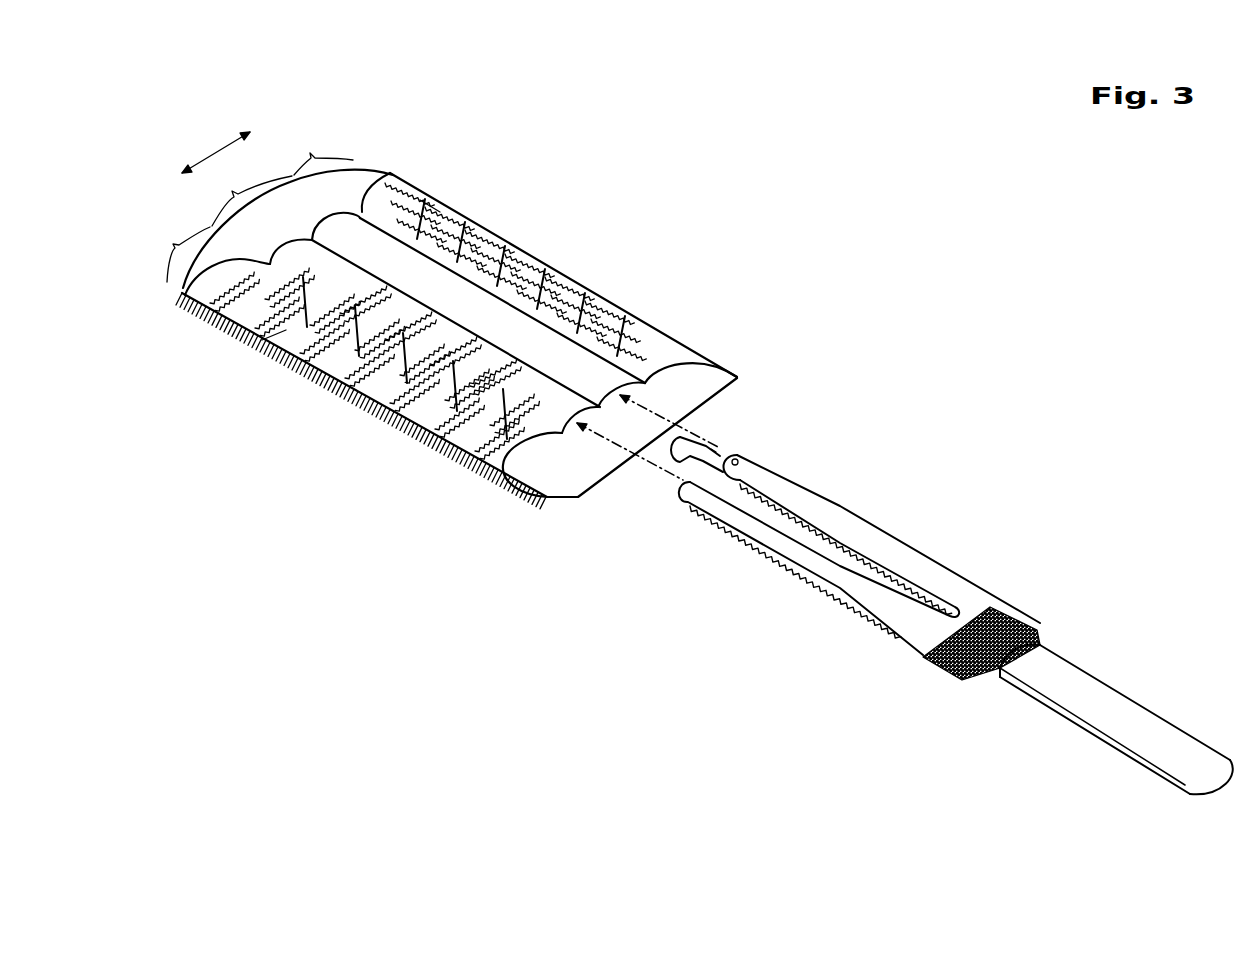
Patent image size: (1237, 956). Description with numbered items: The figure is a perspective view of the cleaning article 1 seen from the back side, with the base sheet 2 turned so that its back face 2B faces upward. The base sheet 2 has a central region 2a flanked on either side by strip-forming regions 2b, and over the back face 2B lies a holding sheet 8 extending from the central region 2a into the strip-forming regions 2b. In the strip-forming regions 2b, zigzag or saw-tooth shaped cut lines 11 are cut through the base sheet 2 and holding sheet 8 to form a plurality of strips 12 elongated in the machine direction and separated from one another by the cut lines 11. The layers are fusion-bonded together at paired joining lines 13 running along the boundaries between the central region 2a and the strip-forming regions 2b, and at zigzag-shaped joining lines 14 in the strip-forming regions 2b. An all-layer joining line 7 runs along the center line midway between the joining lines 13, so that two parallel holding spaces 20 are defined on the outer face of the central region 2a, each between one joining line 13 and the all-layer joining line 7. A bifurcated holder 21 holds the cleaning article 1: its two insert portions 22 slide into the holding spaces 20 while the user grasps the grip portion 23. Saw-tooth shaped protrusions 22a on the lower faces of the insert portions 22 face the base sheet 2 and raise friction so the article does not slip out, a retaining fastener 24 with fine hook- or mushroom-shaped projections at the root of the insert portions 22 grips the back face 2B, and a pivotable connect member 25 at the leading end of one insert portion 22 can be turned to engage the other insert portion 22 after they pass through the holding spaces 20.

The cleaning article 1 is at (454, 331).
The base sheet 2 is at (363, 180).
The central region 2a is at (252, 197).
The strip-forming regions 2b is at (251, 204).
The back face 2B is at (193, 275).
The all-layer joining line 7 is at (393, 280).
The holding sheet 8 is at (738, 378).
The cut lines 11 is at (516, 243).
The strips 12 is at (497, 227).
The joining lines 13 is at (395, 213).
The joining lines 14 is at (412, 192).
The holding spaces 20 is at (613, 397).
The holder 21 is at (952, 601).
The insert portions 22 is at (847, 577).
The saw-tooth shaped protrusions 22a is at (693, 508).
The grip portion 23 is at (1088, 707).
The retaining fastener 24 is at (935, 665).
The connect member 25 is at (723, 440).